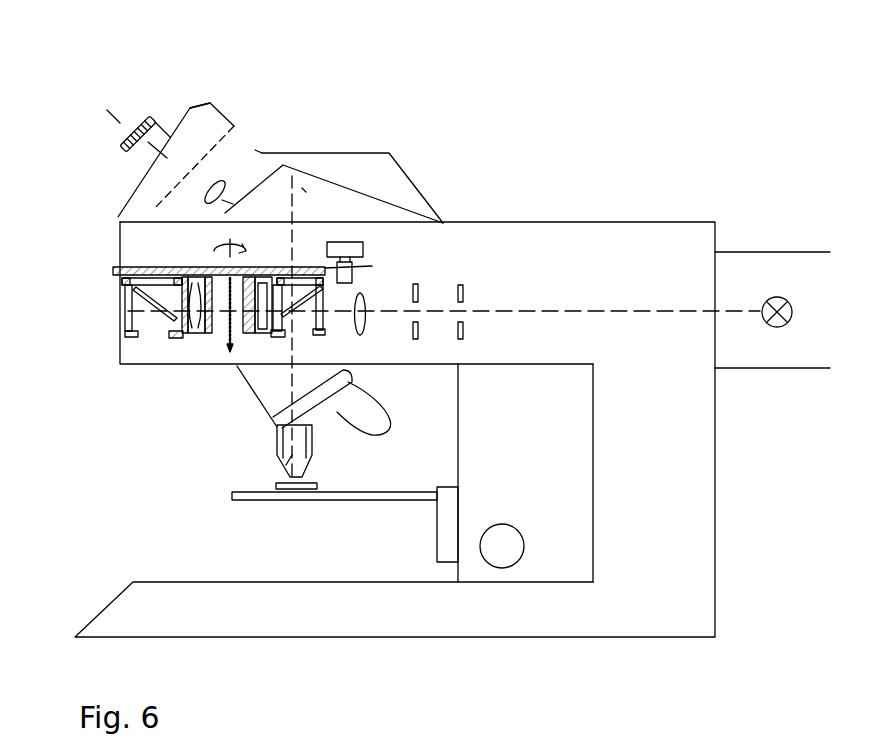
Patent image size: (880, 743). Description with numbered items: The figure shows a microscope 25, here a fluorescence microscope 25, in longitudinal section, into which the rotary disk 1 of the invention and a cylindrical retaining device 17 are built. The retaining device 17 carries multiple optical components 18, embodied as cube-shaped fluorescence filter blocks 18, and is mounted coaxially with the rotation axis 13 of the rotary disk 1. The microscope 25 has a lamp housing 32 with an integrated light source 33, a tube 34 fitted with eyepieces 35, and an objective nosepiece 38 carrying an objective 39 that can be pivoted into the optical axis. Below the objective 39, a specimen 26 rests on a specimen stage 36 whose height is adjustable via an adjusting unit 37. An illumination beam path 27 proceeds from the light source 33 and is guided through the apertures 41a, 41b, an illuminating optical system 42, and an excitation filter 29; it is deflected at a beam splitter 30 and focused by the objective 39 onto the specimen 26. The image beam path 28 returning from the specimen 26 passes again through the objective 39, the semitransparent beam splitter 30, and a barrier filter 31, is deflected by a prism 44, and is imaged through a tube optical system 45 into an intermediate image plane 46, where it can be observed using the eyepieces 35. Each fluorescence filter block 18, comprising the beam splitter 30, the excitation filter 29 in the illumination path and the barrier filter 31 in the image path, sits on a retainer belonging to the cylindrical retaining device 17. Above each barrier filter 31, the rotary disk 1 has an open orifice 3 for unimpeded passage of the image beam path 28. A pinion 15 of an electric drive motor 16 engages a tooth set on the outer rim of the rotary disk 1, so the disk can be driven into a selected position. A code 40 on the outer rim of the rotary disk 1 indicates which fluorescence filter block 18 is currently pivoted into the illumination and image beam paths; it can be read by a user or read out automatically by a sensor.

The rotary disk 1 is at (183, 267).
The open orifice 3 is at (300, 266).
The rotation axis 13 is at (283, 170).
The pinion 15 is at (335, 284).
The electric drive motor 16 is at (352, 270).
The cylindrical retaining device 17 is at (200, 345).
The optical component (fluorescence filter block) 18 is at (272, 266).
The microscope (fluorescence microscope) 25 is at (706, 197).
The specimen 26 is at (236, 494).
The illumination beam path 27 is at (628, 310).
The image beam path 28 is at (302, 188).
The excitation filter 29 is at (324, 292).
The beam splitter 30 is at (170, 335).
The barrier filter 31 is at (322, 267).
The lamp housing 32 is at (740, 366).
The light source 33 is at (783, 328).
The tube 34 is at (144, 201).
The eyepieces 35 is at (123, 155).
The specimen stage 36 is at (244, 499).
The adjusting unit 37 is at (505, 545).
The objective nosepiece 38 is at (278, 426).
The objective 39 is at (276, 485).
The code 40 is at (122, 278).
The aperture 41a is at (464, 287).
The aperture 41b is at (418, 284).
The illuminating optical system 42 is at (366, 293).
The prism 44 is at (262, 199).
The tube optical system 45 is at (218, 203).
The intermediate image plane 46 is at (190, 107).